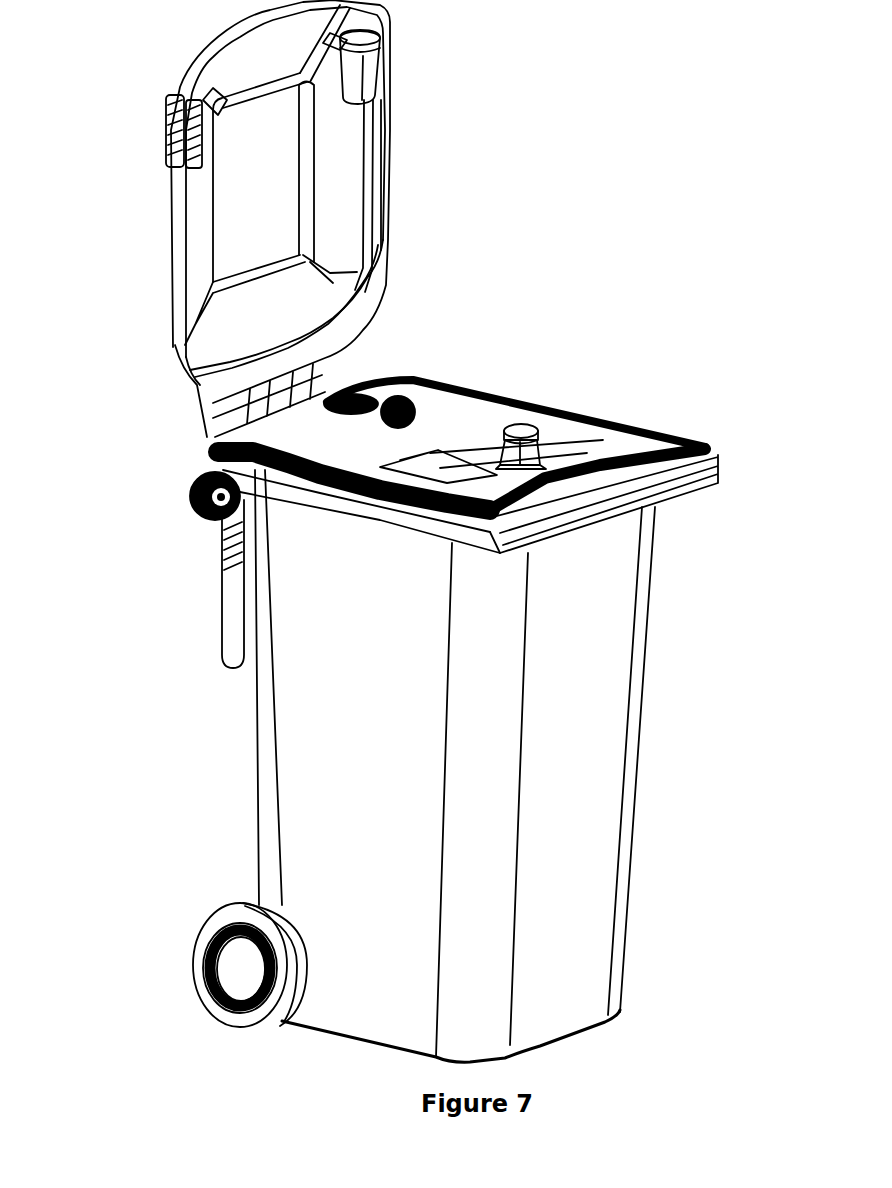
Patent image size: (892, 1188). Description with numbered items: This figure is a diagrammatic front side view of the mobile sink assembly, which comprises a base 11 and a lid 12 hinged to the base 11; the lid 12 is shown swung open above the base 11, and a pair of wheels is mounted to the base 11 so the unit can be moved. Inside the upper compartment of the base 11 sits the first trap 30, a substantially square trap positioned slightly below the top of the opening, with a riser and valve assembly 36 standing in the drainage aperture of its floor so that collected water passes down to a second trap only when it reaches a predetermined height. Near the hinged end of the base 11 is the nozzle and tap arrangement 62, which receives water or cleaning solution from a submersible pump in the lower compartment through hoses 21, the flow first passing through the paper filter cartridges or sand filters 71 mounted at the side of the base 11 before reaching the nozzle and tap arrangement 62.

The base 11 is at (399, 766).
The lid 12 is at (358, 172).
The hoses 21 is at (190, 490).
The first trap 30 is at (443, 418).
The riser and valve assembly 36 is at (548, 404).
The nozzle and tap arrangement 62 is at (382, 380).
The paper filter cartridges/sand filters 71 is at (236, 622).